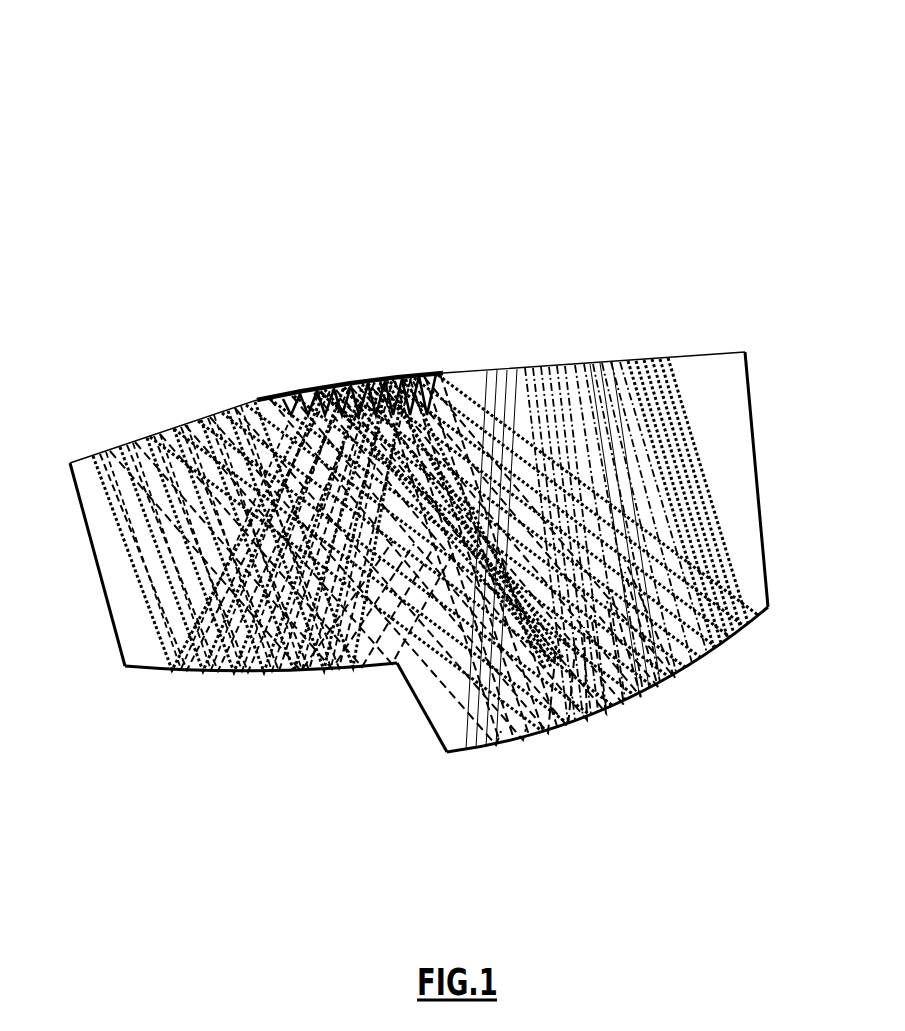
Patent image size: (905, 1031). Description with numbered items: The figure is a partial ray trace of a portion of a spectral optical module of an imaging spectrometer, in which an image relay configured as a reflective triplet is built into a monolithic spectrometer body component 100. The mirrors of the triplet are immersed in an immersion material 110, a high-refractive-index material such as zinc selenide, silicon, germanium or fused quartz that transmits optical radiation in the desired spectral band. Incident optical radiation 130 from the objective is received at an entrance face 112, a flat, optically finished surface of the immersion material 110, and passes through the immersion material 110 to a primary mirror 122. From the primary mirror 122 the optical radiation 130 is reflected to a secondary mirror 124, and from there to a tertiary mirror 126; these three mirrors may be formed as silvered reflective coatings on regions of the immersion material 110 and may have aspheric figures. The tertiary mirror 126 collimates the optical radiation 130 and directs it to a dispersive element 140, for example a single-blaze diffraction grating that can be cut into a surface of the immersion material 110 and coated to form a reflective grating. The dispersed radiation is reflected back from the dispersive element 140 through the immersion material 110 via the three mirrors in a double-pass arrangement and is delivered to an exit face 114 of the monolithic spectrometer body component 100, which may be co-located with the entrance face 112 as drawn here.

The monolithic spectrometer body component 100 is at (445, 394).
The immersion material 110 is at (460, 538).
The entrance face 112 is at (650, 358).
The exit face 114 is at (560, 361).
The primary mirror 122 is at (705, 659).
The secondary mirror 124 is at (372, 391).
The tertiary mirror 126 is at (252, 677).
The incident optical radiation 130 is at (440, 497).
The dispersive element 140 is at (144, 445).